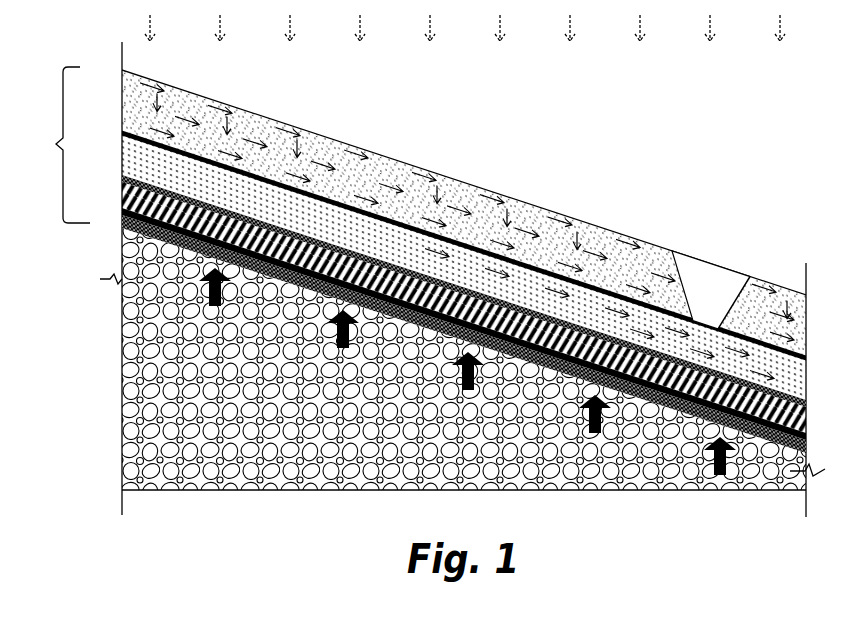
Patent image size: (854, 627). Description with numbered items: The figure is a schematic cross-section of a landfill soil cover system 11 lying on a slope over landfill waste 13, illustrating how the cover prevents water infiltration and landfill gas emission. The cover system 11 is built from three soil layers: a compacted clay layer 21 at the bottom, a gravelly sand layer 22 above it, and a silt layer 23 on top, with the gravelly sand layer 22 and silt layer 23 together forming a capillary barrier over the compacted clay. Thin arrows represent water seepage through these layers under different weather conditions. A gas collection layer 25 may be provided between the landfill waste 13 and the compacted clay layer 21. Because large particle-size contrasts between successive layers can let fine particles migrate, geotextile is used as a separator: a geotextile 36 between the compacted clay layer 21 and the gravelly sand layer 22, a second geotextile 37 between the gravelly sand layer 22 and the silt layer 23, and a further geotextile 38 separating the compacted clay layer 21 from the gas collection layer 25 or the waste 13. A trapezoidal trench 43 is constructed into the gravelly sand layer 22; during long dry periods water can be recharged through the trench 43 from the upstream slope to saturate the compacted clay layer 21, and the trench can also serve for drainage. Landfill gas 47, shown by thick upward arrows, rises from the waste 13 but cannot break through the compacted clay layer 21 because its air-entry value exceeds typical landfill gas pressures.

The landfill soil cover system 11 is at (56, 145).
The landfill waste 13 is at (122, 360).
The compacted clay layer 21 is at (464, 307).
The gravelly sand layer 22 is at (464, 246).
The silt layer 23 is at (464, 214).
The gas collection layer 25 is at (464, 324).
The geotextile 36 is at (464, 291).
The second layer of geotextile 37 is at (464, 266).
The geotextile 38 is at (464, 334).
The trench 43 is at (711, 295).
The landfill gas 47 is at (467, 390).